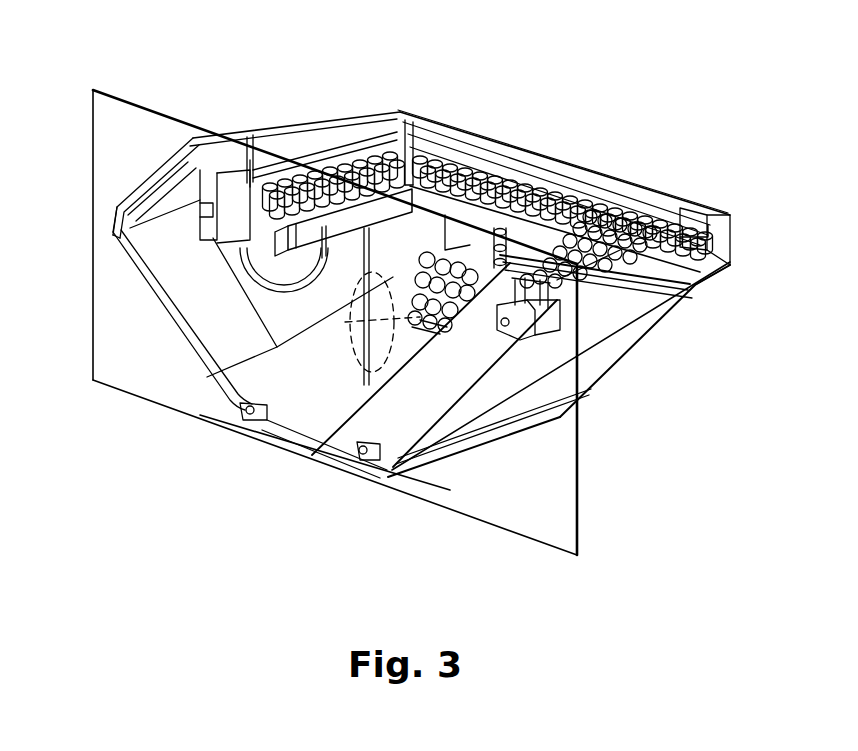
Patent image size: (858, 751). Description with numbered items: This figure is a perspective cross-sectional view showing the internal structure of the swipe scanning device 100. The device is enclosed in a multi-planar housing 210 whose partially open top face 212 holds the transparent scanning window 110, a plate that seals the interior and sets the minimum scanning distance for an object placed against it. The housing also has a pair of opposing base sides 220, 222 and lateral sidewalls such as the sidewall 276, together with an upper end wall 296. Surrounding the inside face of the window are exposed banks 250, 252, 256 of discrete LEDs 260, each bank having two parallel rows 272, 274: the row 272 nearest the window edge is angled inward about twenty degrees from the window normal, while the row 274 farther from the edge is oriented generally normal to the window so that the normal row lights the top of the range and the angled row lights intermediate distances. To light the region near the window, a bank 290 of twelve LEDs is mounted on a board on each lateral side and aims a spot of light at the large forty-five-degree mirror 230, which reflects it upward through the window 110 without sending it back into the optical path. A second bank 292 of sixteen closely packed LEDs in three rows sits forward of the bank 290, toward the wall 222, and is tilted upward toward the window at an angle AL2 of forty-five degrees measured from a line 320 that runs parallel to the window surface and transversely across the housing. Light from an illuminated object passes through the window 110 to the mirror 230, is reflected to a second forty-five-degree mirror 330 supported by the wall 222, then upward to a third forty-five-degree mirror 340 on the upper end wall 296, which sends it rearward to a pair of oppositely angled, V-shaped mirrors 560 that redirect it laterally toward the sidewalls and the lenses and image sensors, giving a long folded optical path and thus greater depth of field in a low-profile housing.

The scanning device 100 is at (643, 352).
The transparent scanning window 110 is at (418, 136).
The housing 210 is at (278, 135).
The top face 212 is at (338, 108).
The base side 220 is at (598, 378).
The base side 222 is at (187, 363).
The mirror 230 is at (430, 353).
The bank of LEDs 250 is at (548, 176).
The bank of LEDs 252 is at (315, 160).
The bank of LEDs 256 is at (640, 262).
The LEDs 260 is at (490, 173).
The row of LEDs 272 is at (657, 223).
The row of LEDs 274 is at (637, 245).
The sidewall 276 is at (547, 137).
The bank of LEDs 290 is at (483, 243).
The second bank of LEDs 292 is at (417, 332).
The upper end wall 296 is at (157, 170).
The line parallel to window surface 320 is at (362, 445).
The second mirror 330 is at (197, 323).
The third mirror 340 is at (120, 222).
The oppositely angled mirrors 560 is at (247, 208).
The angle AL2 is at (352, 300).